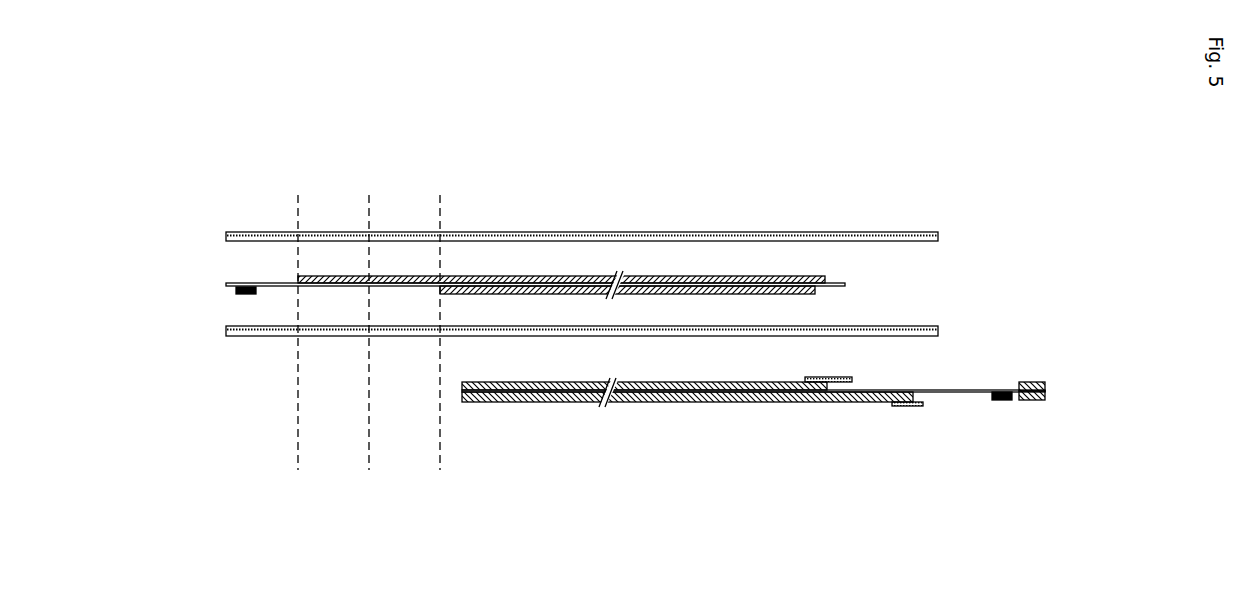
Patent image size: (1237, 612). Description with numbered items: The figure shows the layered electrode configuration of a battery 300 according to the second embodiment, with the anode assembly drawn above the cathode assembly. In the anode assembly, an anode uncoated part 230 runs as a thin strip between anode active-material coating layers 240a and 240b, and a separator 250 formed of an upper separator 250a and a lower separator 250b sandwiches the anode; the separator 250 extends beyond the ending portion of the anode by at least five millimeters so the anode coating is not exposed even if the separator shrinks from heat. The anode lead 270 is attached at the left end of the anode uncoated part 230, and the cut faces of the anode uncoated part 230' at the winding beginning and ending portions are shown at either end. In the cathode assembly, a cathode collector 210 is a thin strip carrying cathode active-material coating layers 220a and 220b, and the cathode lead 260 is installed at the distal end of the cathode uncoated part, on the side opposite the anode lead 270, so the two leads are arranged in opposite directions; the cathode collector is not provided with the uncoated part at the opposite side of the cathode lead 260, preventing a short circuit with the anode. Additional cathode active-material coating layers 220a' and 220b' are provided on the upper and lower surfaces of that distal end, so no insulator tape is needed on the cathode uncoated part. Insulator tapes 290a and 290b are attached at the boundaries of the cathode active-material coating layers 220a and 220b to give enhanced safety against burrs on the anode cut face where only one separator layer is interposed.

The display device 300 is at (827, 133).
The substrate 210 is at (502, 403).
The first flexible layer 220a is at (644, 432).
The second flexible layer 220b is at (687, 437).
The cathode active-material coating layer 220a' is at (1082, 376).
The cathode active-material coating layer 220b' is at (1083, 405).
The conductive line 230 is at (535, 238).
The anode uncoated part 230' is at (543, 281).
The first adhesive layer 240a is at (700, 286).
The second adhesive layer 240b is at (558, 276).
The separator 250 is at (663, 276).
The upper protective film 250a is at (940, 237).
The lower protective film 250b is at (940, 331).
The cathode lead 260 is at (1000, 400).
The anode lead 270 is at (232, 289).
The insulator tape 290a is at (781, 402).
The insulator tape 290b is at (898, 406).